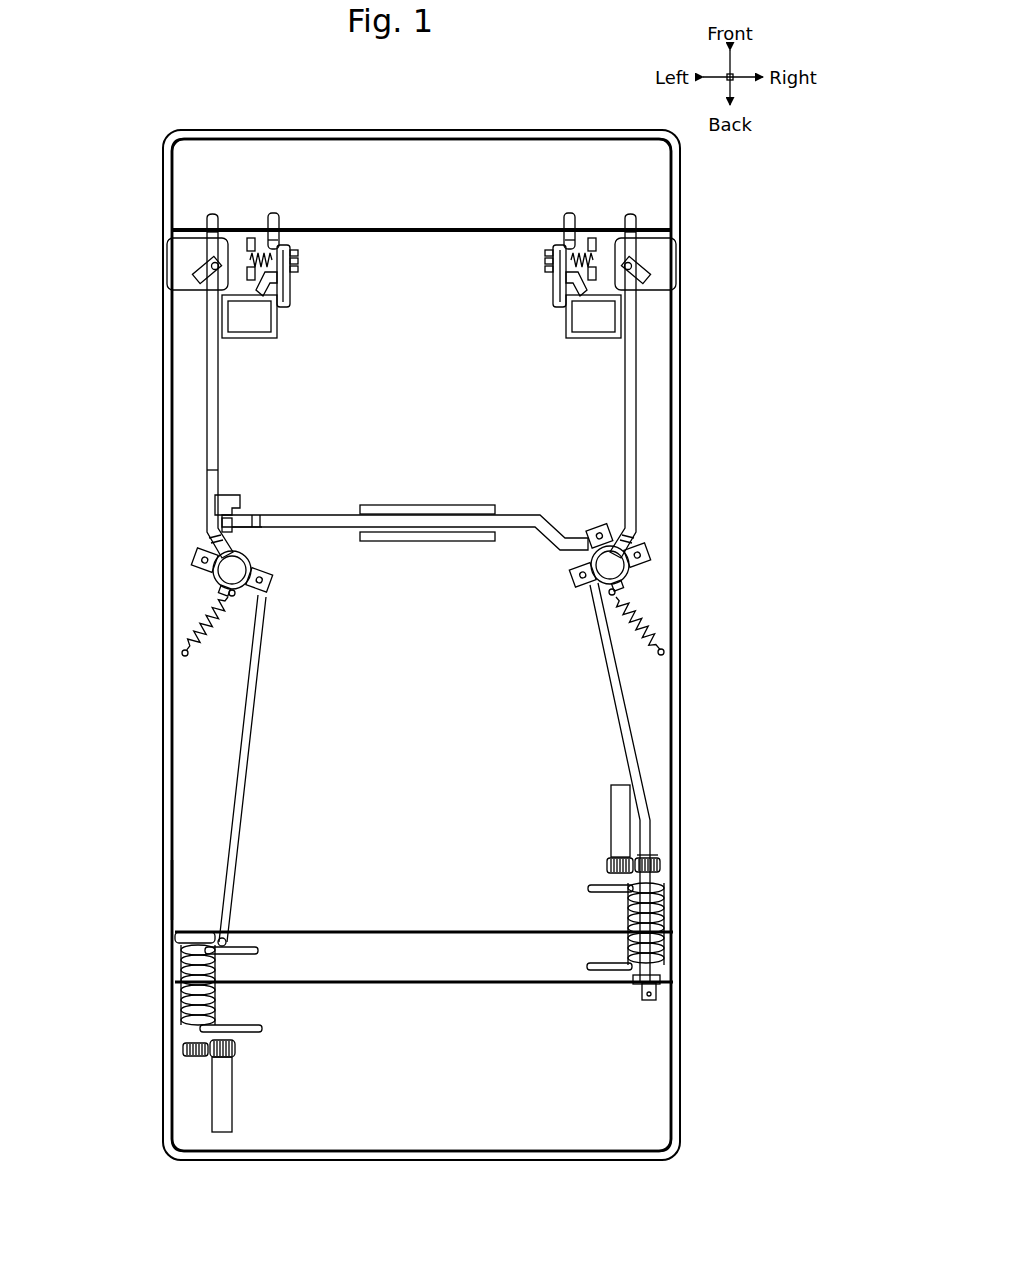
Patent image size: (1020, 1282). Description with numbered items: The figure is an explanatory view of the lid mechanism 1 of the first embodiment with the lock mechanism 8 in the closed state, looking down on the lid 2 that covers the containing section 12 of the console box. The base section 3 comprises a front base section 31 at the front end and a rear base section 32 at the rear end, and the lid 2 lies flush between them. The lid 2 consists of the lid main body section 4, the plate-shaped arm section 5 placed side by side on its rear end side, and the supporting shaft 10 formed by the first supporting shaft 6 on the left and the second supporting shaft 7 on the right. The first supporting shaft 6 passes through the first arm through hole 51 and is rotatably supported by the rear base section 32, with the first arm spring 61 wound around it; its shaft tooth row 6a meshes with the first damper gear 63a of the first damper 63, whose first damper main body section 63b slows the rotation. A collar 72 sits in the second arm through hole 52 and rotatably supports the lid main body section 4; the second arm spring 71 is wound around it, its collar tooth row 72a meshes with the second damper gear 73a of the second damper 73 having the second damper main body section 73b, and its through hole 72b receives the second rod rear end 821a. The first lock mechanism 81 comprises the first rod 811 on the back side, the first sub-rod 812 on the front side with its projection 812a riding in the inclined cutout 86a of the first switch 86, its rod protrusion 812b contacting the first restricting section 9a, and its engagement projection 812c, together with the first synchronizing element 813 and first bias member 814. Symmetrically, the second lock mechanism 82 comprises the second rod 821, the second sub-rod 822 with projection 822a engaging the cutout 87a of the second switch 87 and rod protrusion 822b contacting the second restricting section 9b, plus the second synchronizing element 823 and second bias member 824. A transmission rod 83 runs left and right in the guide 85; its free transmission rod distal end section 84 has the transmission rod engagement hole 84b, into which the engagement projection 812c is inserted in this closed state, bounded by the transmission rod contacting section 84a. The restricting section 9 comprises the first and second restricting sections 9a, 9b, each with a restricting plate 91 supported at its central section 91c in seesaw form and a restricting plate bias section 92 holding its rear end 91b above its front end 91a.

The lid mechanism 1 is at (142, 121).
The lid 2 is at (712, 475).
The base section 3 is at (421, 645).
The front base section 31 is at (305, 150).
The rear base section 32 is at (640, 1100).
The lid main body section 4 is at (197, 735).
The arm section 5 is at (410, 984).
The first arm through hole 51 is at (225, 956).
The second arm through hole 52 is at (623, 953).
The first supporting shaft 6 is at (210, 1005).
The shaft tooth row 6a is at (183, 1048).
The first arm spring 61 is at (185, 970).
The first damper 63 is at (286, 1082).
The first damper gear 63a is at (235, 1048).
The first damper main body section 63b is at (225, 1085).
The second supporting shaft 7 is at (658, 876).
The second arm spring 71 is at (665, 905).
The collar 72 is at (696, 826).
The collar tooth row 72a is at (655, 862).
The through hole 72b is at (650, 855).
The second damper 73 is at (562, 829).
The second damper gear 73a is at (607, 865).
The second damper main body section 73b is at (611, 840).
The lock mechanism 8 is at (434, 588).
The first lock mechanism 81 is at (159, 569).
The first rod 811 is at (230, 807).
The first sub-rod 812 is at (171, 377).
The projection 812a is at (196, 228).
The rod protrusion 812b is at (238, 325).
The engagement projection 812c is at (216, 473).
The first synchronizing element 813 is at (228, 572).
The first bias member 814 is at (205, 620).
The second lock mechanism 82 is at (693, 588).
The second rod 821 is at (677, 795).
The second rod rear end 821a is at (658, 990).
The second sub-rod 822 is at (673, 364).
The projection 822a is at (672, 228).
The rod protrusion 822b is at (600, 325).
The second synchronizing element 823 is at (615, 570).
The second bias member 824 is at (650, 612).
The transmission rod 83 is at (350, 527).
The transmission rod distal end section 84 is at (257, 505).
The transmission rod contacting section 84a is at (222, 519).
The transmission rod engagement hole 84b is at (240, 530).
The guide 85 is at (425, 515).
The first switch 86 is at (158, 265).
The cutout 86a is at (205, 276).
The second switch 87 is at (681, 260).
The cutout 87a is at (640, 272).
The restricting section 9 is at (423, 264).
The first restricting section 9a is at (423, 254).
The second restricting section 9b is at (535, 290).
The restricting plate 91 is at (292, 278).
The front end 91a is at (270, 245).
The rear end 91b is at (290, 308).
The central section 91c is at (280, 232).
The restricting plate bias section 92 is at (260, 252).
The supporting shaft 10 is at (441, 953).
The containing section 12 is at (175, 888).